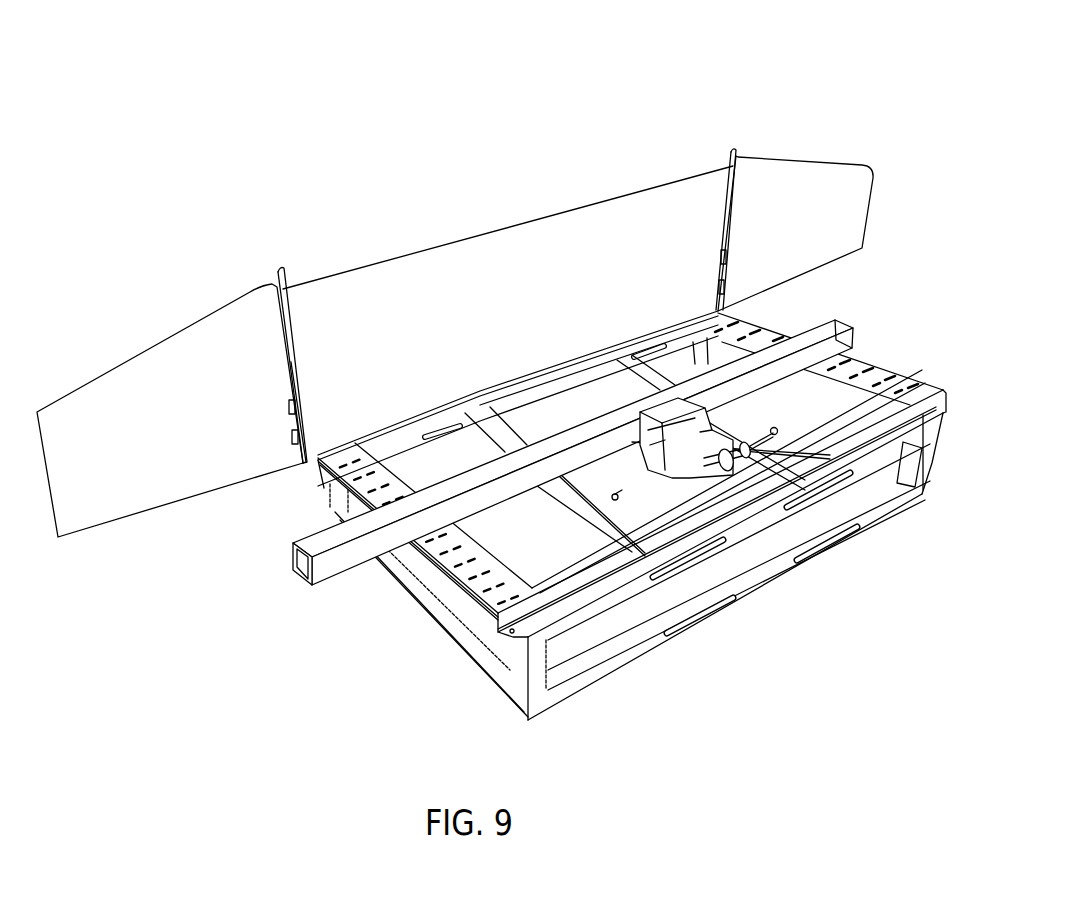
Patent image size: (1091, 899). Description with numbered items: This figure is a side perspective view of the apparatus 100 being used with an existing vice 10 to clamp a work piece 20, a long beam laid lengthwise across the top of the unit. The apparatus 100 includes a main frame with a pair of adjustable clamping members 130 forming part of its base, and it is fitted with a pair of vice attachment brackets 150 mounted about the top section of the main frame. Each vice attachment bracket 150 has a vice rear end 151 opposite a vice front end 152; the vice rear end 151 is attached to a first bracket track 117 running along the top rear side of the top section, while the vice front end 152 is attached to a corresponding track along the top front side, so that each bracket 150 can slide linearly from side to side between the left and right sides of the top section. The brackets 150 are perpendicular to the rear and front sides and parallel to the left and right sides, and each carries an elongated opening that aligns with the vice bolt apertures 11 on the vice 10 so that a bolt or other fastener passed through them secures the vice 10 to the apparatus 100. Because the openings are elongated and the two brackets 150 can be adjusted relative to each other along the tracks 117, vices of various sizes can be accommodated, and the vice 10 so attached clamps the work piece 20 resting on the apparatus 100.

The apparatus 100 is at (703, 76).
The first bracket track 117 is at (438, 425).
The vice rear end 151 is at (485, 413).
The vice front end 152 is at (702, 612).
The vice attachment bracket 150 is at (805, 452).
The vice bolt aperture 11 is at (615, 497).
The vice 10 is at (692, 443).
The work piece 20 is at (340, 555).
The adjustable clamping member 130 is at (602, 510).